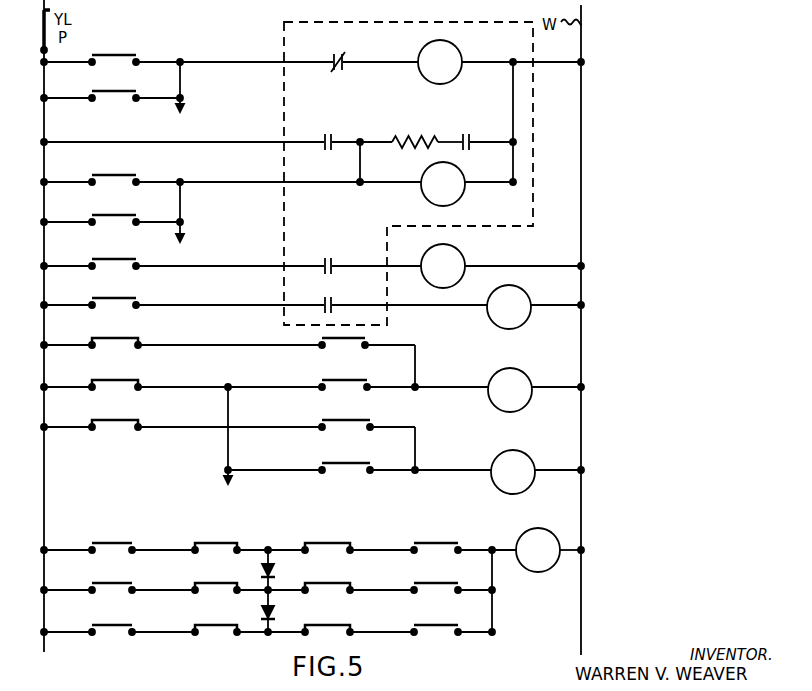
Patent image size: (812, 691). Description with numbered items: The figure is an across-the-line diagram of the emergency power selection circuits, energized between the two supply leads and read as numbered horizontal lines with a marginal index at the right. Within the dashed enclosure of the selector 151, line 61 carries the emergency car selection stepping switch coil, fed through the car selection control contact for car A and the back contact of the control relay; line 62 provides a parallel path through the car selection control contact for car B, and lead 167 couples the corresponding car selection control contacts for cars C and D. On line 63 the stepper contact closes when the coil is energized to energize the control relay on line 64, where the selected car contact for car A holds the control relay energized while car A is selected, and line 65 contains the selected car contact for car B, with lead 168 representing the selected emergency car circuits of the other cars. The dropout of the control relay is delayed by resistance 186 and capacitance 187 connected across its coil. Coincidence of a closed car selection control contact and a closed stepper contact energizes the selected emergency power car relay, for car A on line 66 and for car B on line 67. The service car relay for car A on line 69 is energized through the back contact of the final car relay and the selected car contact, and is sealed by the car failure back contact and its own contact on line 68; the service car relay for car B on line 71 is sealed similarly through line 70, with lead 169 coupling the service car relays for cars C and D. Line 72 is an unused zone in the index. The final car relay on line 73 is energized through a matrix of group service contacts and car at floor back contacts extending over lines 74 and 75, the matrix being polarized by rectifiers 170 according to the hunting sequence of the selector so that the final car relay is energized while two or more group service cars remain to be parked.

The selector 151 is at (533, 143).
The lead 167 is at (183, 107).
The lead 168 is at (184, 236).
The lead 169 is at (223, 480).
The rectifiers 170 is at (271, 572).
The resistance 186 is at (426, 132).
The capacitance 187 is at (478, 121).
The line 61 is at (385, 58).
The line 62 is at (329, 94).
The line 63 is at (329, 133).
The line 64 is at (354, 134).
The line 65 is at (329, 216).
The line 66 is at (419, 262).
The line 67 is at (419, 302).
The line 68 is at (329, 353).
The line 69 is at (409, 388).
The line 70 is at (329, 435).
The line 71 is at (498, 472).
The line 72 is at (607, 513).
The line 73 is at (380, 548).
The line 74 is at (329, 583).
The line 75 is at (329, 596).